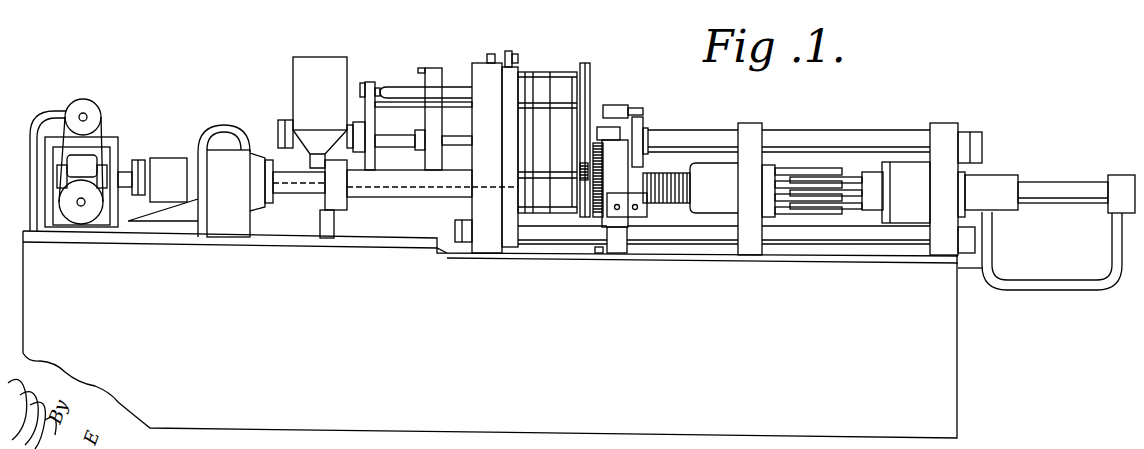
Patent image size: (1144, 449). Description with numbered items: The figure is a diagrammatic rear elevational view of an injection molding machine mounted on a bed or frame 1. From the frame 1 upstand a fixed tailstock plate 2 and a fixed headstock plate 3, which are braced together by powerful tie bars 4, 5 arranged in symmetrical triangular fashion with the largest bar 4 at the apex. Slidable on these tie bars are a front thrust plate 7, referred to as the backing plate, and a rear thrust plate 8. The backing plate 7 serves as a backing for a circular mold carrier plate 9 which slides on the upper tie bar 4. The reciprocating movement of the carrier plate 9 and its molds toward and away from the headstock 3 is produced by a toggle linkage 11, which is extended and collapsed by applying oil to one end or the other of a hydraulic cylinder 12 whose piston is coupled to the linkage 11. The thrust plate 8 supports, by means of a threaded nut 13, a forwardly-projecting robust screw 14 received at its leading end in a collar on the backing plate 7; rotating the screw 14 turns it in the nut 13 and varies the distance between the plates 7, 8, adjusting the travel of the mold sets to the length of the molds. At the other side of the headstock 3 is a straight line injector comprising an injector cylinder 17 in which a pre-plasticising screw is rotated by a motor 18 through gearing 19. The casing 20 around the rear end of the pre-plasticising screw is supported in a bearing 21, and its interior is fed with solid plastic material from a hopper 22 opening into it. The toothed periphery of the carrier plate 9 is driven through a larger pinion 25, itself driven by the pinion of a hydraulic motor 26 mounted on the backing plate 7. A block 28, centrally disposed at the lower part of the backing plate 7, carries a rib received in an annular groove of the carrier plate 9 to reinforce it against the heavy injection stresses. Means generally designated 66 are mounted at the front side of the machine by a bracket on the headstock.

The bed or frame 1 is at (935, 358).
The fixed tailstock plate 2 is at (948, 253).
The fixed headstock plate 3 is at (487, 247).
The tie bar 4 is at (893, 138).
The tie bar 5 is at (843, 239).
The front thrust plate 7 is at (632, 237).
The rear thrust plate 8 is at (750, 246).
The mold carrier plate 9 is at (582, 63).
The toggle linkage 11 is at (796, 182).
The hydraulic cylinder 12 is at (1061, 185).
The threaded nut 13 is at (714, 188).
The screw 14 is at (664, 178).
The injector cylinder 17 is at (427, 193).
The motor 18 is at (82, 99).
The gearing 19 is at (78, 187).
The casing 20 is at (299, 191).
The bearing 21 is at (219, 160).
The hopper 22 is at (316, 62).
The larger pinion 25 is at (597, 190).
The hydraulic motor 26 is at (634, 218).
The block 28 is at (597, 215).
The magnetic means 66 is at (459, 78).